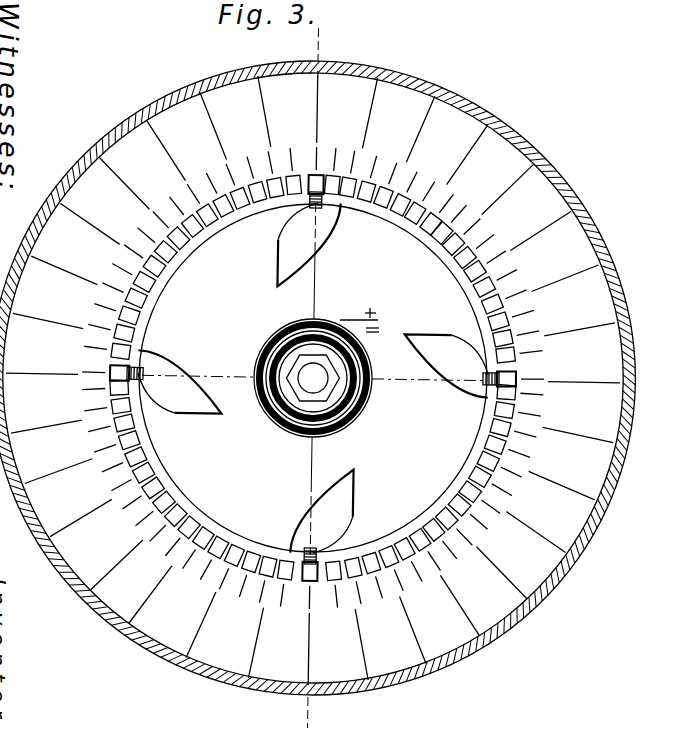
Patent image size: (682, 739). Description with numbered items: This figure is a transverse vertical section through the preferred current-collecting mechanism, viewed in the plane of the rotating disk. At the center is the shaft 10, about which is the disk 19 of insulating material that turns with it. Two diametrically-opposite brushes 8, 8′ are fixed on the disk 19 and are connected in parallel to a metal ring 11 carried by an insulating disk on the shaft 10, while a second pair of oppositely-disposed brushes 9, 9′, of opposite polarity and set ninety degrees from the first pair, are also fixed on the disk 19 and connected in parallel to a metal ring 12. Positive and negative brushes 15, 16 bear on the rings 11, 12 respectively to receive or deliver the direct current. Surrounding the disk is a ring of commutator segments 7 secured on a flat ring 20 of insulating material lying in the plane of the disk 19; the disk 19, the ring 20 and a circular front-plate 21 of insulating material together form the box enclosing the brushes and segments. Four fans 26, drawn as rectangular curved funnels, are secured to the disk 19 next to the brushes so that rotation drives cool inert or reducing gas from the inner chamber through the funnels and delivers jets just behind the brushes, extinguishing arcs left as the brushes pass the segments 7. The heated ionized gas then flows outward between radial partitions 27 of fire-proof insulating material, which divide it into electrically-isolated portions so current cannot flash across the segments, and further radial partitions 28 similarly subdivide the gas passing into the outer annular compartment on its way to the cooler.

The commutator segments 7 is at (397, 222).
The brush 8 is at (313, 202).
The brush 8′ is at (318, 545).
The brush 9 is at (141, 378).
The brush 9′ is at (485, 372).
The axle hole 10 is at (313, 378).
The metal ring 11 is at (292, 323).
The metal ring 12 is at (270, 342).
The positive brush 15 is at (352, 320).
The negative brush 16 is at (363, 333).
The disk of insulating material 19 is at (312, 377).
The flat ring of insulating material 20 is at (613, 355).
The circular front-plate 21 is at (612, 265).
The fans 26 is at (277, 262).
The radial partitions 27 is at (535, 271).
The radial partitions 28 is at (570, 278).